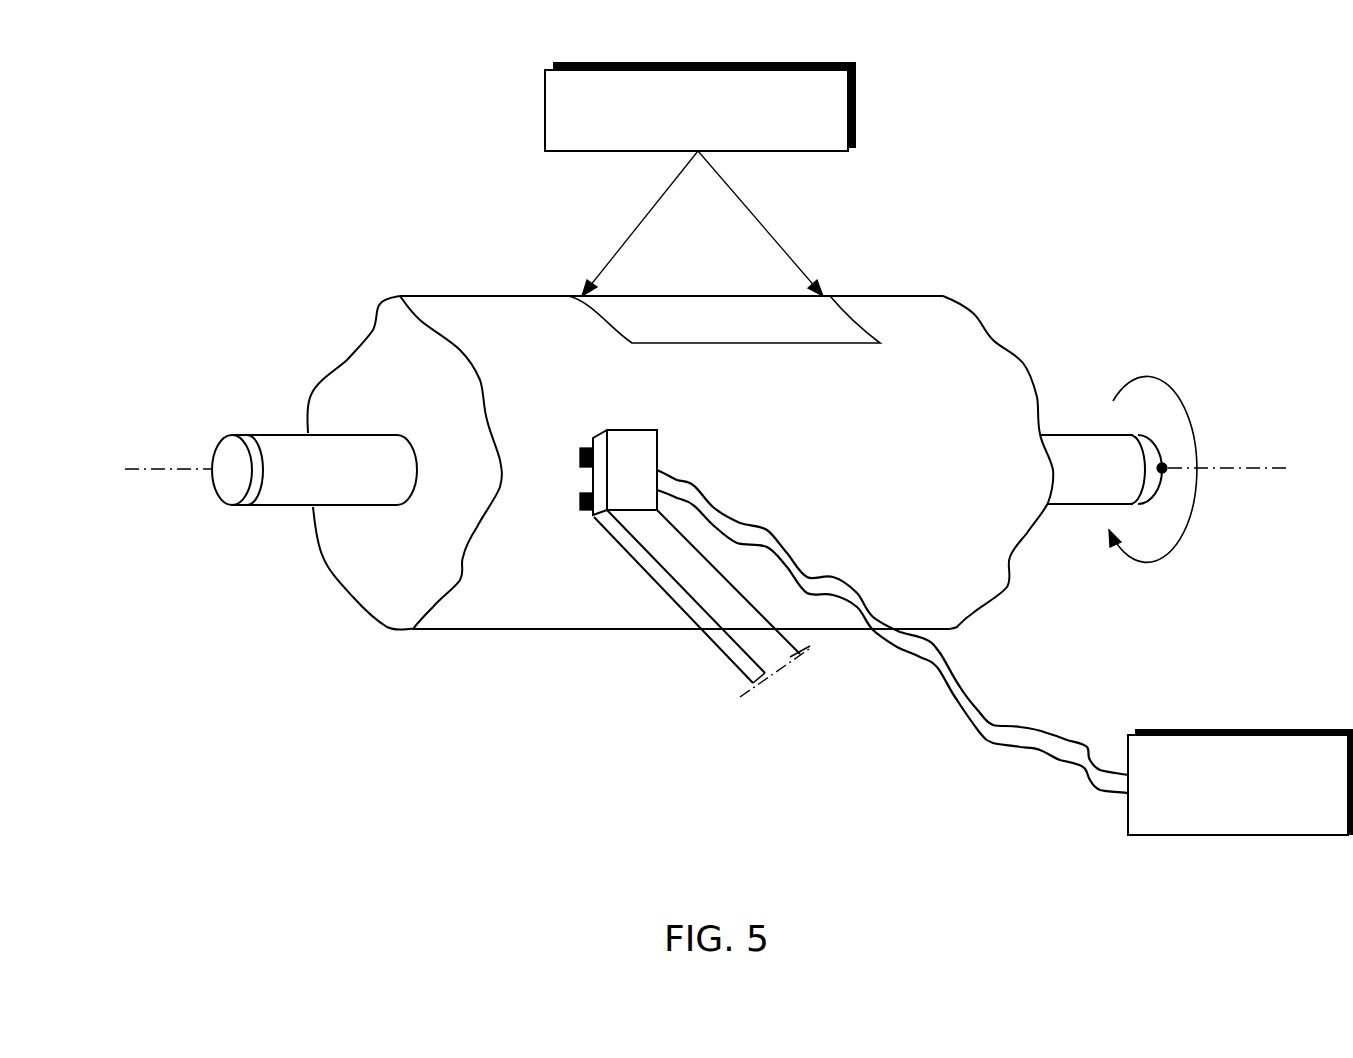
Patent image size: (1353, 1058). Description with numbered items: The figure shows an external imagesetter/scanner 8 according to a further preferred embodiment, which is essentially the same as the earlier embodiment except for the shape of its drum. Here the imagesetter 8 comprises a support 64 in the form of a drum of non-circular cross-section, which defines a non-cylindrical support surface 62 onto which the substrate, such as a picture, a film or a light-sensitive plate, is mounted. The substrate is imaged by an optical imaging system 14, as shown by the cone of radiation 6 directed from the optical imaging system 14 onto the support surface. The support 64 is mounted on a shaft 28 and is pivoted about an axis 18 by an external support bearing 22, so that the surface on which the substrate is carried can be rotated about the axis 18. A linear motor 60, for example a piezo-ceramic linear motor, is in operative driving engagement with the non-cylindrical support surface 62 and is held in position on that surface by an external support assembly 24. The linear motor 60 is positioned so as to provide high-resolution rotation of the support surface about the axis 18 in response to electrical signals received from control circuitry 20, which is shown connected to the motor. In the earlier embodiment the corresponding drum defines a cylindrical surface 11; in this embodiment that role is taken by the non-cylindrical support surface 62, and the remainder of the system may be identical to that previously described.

The cone of radiation 6 is at (625, 240).
The external imagesetter/scanner 8 is at (1030, 227).
The cylindrical surface 11 is at (960, 325).
The optical imaging system 14 is at (857, 112).
The axis 18 is at (197, 472).
The control circuitry 20 is at (1255, 730).
The external support bearing 22 is at (230, 468).
The external support assembly 24 is at (722, 646).
The shaft 28 is at (277, 507).
The linear motor 60 is at (637, 452).
The non-cylindrical support surface 62 is at (885, 322).
The support 64 is at (336, 631).